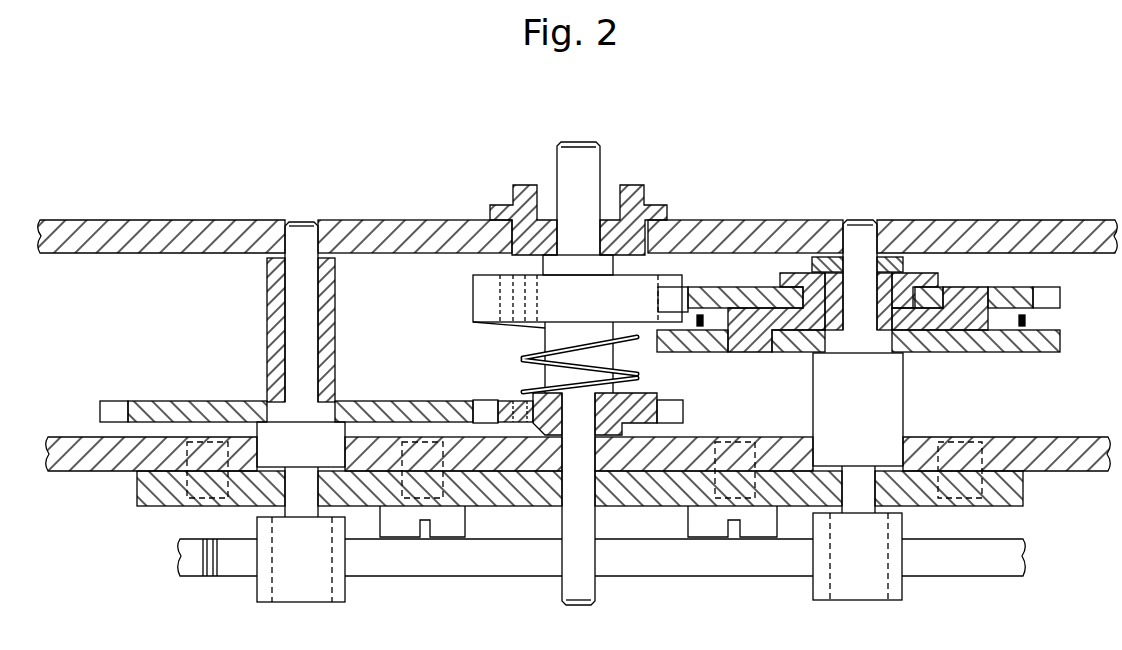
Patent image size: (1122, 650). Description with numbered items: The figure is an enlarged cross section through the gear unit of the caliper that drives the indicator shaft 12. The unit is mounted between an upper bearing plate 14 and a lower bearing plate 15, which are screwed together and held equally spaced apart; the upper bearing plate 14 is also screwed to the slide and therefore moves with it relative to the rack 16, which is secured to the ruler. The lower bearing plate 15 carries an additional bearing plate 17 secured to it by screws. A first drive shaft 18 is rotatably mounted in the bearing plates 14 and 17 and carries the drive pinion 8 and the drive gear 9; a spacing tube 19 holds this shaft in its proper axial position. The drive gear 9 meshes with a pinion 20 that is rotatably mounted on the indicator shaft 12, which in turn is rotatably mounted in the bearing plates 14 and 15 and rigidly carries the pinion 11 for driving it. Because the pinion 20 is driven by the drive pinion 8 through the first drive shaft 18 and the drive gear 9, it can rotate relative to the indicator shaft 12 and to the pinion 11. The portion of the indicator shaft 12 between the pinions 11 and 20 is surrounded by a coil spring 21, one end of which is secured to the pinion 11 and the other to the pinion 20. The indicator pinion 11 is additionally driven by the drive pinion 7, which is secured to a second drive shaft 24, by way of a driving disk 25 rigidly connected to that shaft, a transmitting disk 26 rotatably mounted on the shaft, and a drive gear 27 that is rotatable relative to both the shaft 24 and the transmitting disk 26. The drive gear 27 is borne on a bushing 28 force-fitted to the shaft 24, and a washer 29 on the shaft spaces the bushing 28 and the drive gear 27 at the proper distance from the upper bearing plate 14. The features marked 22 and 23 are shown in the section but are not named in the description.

The drive pinion 7 is at (865, 587).
The drive pinion 8 is at (315, 590).
The drive gear 9 is at (163, 408).
The pinion 11 is at (647, 287).
The indicator shaft 12 is at (568, 168).
The upper bearing plate 14 is at (1025, 230).
The lower bearing plate 15 is at (1067, 443).
The rack 16 is at (997, 560).
The additional bearing plate 17 is at (1012, 493).
The first drive shaft 18 is at (308, 238).
The spacing tube 19 is at (327, 337).
The pinion 20 is at (642, 400).
The coil spring 21 is at (523, 360).
The spring seat 22 is at (523, 393).
The splines 23 is at (523, 295).
The second drive shaft 24 is at (852, 482).
The driving disk 25 is at (1040, 355).
The transmitting disk 26 is at (963, 303).
The drive gear 27 is at (728, 298).
The bushing 28 is at (910, 280).
The washer 29 is at (823, 260).